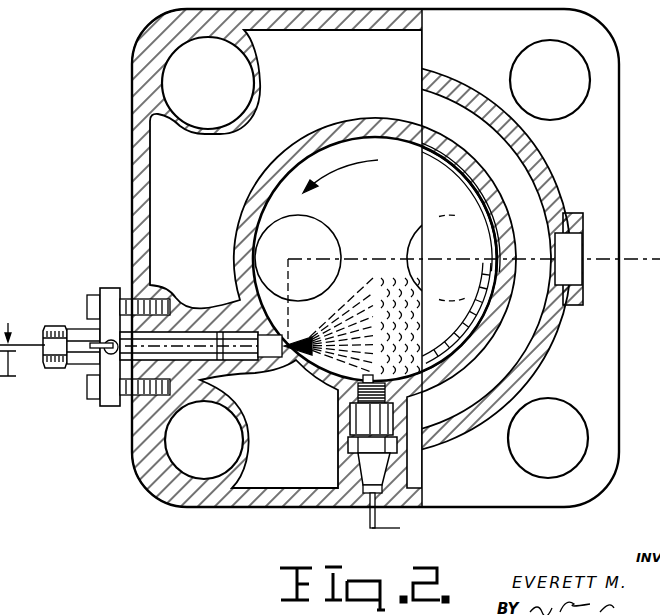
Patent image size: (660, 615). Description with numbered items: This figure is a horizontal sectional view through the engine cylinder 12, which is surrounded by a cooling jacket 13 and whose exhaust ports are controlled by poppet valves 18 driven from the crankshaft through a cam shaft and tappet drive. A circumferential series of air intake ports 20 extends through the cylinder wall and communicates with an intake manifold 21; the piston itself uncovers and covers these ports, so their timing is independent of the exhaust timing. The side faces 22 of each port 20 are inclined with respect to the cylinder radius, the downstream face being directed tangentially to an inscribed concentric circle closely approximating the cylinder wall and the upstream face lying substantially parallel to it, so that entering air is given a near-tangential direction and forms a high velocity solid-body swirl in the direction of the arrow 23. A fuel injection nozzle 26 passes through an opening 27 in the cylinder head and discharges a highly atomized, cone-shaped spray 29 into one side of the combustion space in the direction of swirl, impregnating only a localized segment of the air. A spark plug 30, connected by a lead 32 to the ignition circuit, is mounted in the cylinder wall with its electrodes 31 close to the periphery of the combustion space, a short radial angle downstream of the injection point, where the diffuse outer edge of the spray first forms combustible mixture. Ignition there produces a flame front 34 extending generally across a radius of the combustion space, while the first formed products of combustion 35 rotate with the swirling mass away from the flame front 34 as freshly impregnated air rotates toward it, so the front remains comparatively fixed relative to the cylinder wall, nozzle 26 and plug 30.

The engine cylinder 12 is at (258, 178).
The cooling jacket 13 is at (132, 145).
The poppet valves 18 is at (418, 227).
The air intake ports 20 is at (467, 357).
The intake manifold 21 is at (530, 327).
The side faces of intake ports 22 is at (478, 176).
The arrow indicating direction of air swirl 23 is at (322, 180).
The fuel injection nozzle 26 is at (78, 333).
The opening in the cylinder head 27 is at (200, 326).
The atomized spray 29 is at (311, 338).
The spark plug 30 is at (357, 472).
The electrodes 31 is at (314, 398).
The lead 32 is at (400, 528).
The flame front 34 is at (372, 280).
The first formed products of combustion 35 is at (412, 318).